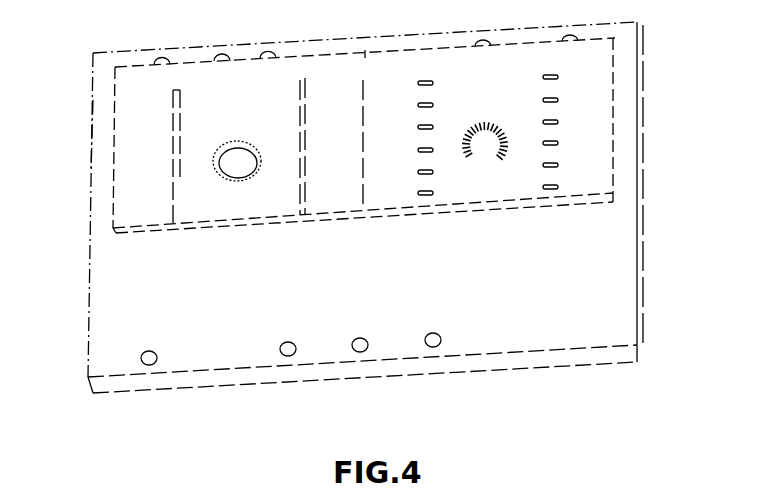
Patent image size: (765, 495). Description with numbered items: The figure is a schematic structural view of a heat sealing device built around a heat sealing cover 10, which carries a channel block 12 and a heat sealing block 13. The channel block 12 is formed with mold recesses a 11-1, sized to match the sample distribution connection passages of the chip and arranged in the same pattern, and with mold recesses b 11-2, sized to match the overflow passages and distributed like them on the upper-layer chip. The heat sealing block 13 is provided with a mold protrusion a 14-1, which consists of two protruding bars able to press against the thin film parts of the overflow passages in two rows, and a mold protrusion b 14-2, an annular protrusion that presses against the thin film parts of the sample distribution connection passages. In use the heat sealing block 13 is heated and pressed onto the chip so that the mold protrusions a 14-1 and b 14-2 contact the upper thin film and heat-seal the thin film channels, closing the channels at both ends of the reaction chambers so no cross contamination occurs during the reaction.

The heat sealing cover 10 is at (588, 292).
The mold recess a 11-1 is at (547, 78).
The mold recess b 11-2 is at (500, 157).
The channel block 12 is at (598, 152).
The heat sealing block 13 is at (147, 133).
The mold protrusion a 14-1 is at (172, 183).
The mold protrusion b 14-2 is at (237, 172).